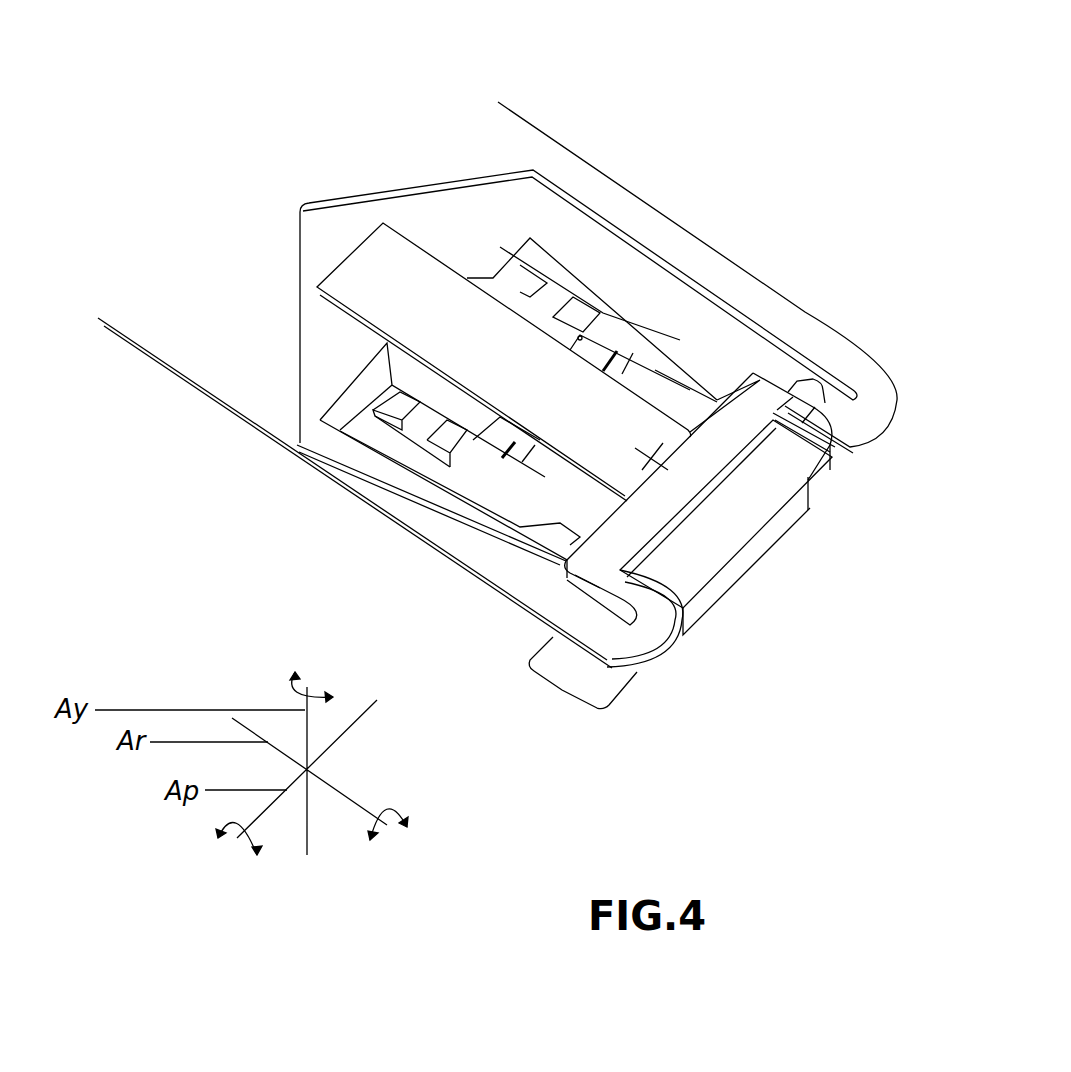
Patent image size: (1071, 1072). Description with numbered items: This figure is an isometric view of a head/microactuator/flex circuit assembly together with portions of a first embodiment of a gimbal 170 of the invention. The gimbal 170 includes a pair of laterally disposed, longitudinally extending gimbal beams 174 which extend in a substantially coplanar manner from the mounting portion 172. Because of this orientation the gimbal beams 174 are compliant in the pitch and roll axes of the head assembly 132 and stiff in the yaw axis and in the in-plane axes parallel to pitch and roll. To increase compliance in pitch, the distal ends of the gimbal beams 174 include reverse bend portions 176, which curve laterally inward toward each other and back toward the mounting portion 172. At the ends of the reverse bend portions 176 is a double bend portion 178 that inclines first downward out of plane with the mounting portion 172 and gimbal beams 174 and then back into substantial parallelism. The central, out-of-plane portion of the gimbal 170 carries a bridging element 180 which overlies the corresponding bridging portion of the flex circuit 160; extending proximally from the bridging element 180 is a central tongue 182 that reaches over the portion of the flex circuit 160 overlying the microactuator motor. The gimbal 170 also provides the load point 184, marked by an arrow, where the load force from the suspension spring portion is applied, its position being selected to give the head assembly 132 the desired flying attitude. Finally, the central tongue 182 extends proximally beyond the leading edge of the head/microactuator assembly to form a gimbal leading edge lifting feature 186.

The head assembly 132 is at (707, 557).
The flex circuit 160 is at (320, 415).
The gimbal 170 is at (153, 360).
The mounting portion 172 is at (213, 225).
The gimbal beams 174 is at (695, 257).
The reverse bend portions 176 is at (553, 688).
The double bend portion 178 is at (808, 380).
The bridging element 180 is at (713, 443).
The central tongue 182 is at (518, 370).
The load point 184 is at (650, 457).
The gimbal leading edge lifting feature 186 is at (378, 270).